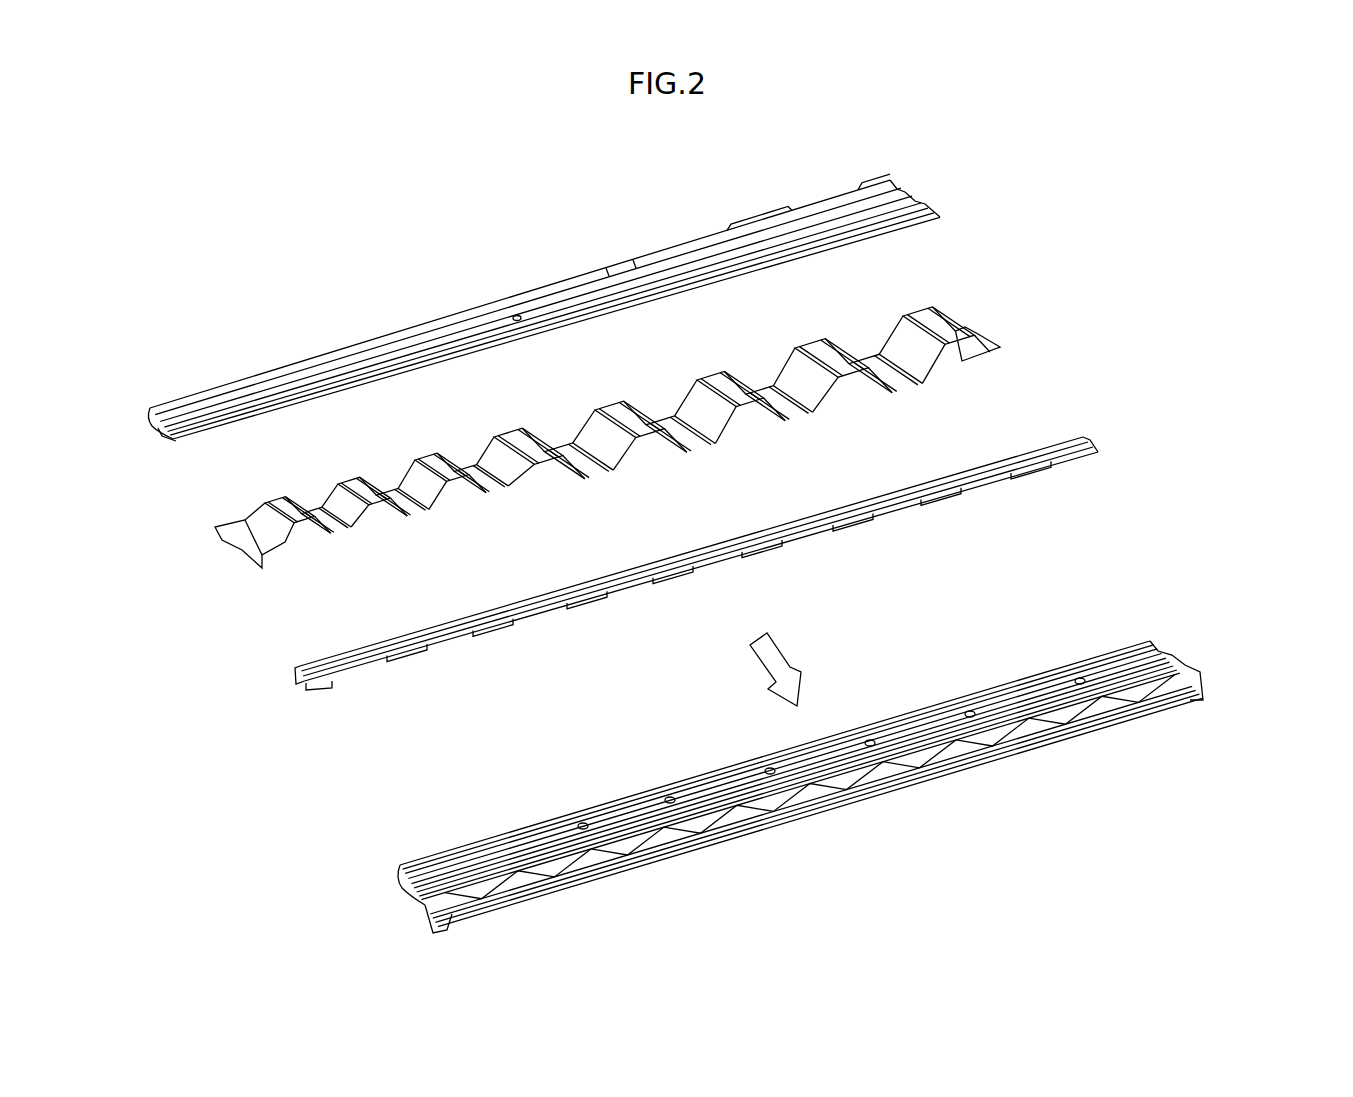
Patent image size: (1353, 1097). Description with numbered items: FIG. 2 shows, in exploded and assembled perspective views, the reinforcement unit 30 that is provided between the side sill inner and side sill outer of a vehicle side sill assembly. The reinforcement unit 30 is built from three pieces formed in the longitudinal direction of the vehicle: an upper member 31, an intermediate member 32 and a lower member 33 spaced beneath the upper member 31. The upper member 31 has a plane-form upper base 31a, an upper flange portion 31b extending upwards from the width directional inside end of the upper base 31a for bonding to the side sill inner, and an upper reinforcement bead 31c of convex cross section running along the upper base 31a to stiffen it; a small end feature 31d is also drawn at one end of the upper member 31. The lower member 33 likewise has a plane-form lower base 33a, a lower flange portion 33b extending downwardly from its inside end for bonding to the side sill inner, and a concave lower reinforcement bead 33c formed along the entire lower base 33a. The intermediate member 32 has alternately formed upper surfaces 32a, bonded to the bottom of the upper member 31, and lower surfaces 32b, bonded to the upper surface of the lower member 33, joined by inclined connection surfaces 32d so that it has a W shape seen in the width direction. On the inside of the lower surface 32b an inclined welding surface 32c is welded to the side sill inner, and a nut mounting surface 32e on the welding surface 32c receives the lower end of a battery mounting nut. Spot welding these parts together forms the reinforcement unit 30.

The reinforcement unit 30 is at (1175, 642).
The upper member 31 is at (604, 319).
The upper base 31a is at (680, 262).
The upper flange portion 31b is at (380, 337).
The upper reinforcement bead 31c is at (515, 318).
The end tab 31d is at (165, 430).
The intermediate member 32 is at (668, 409).
The upper surface 32a is at (717, 372).
The lower surface 32b is at (710, 440).
The welding surface 32c is at (688, 410).
The connection surface 32d is at (740, 410).
The nut mounting surface 32e is at (580, 440).
The lower member 33 is at (753, 563).
The lower base 33a is at (628, 590).
The lower flange portion 33b is at (853, 525).
The lower reinforcement bead 33c is at (305, 685).